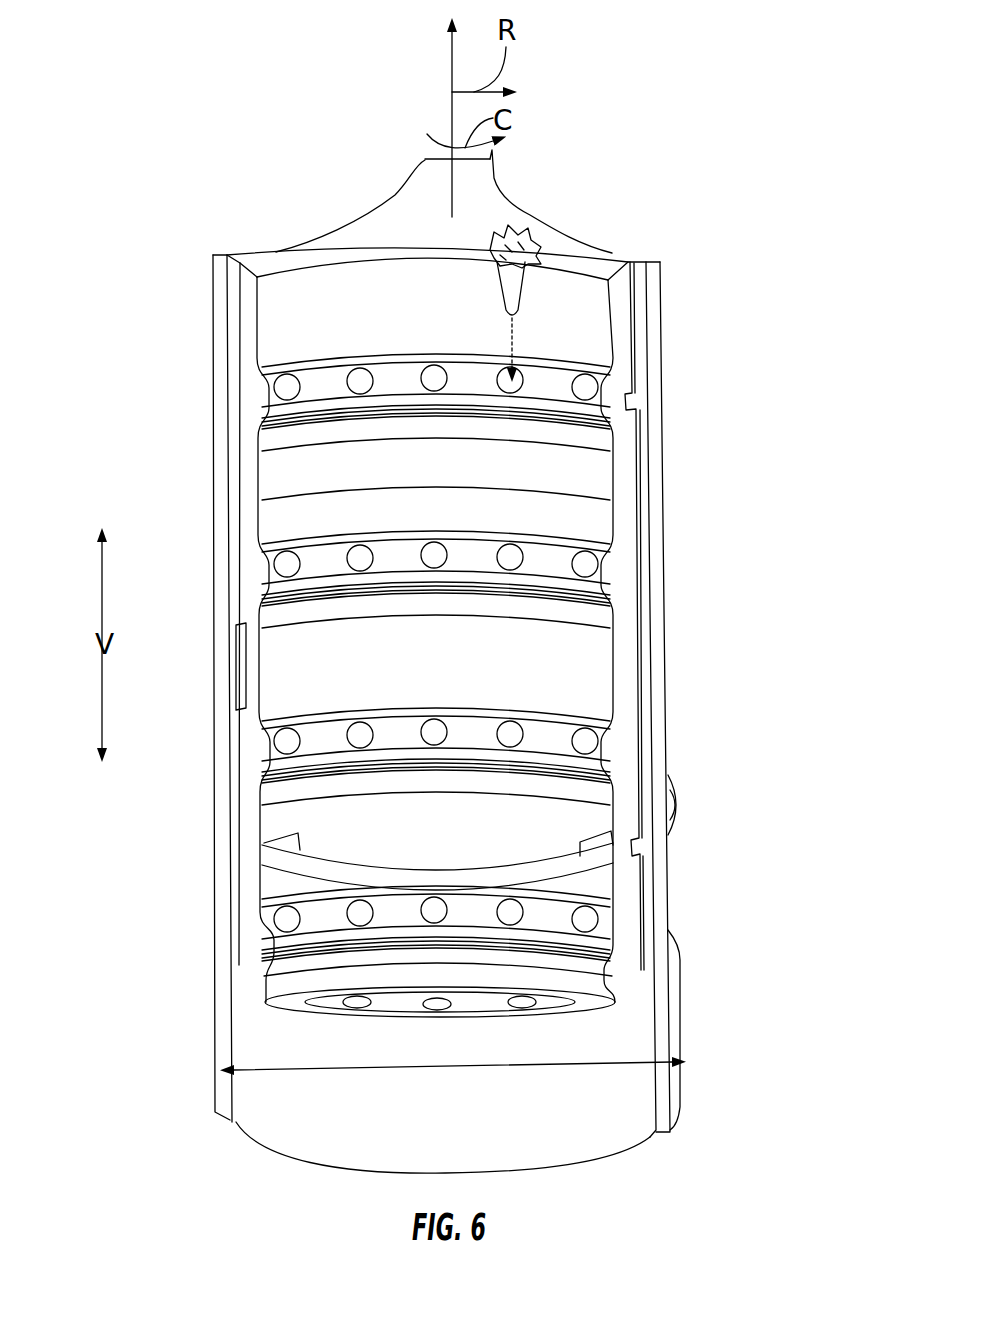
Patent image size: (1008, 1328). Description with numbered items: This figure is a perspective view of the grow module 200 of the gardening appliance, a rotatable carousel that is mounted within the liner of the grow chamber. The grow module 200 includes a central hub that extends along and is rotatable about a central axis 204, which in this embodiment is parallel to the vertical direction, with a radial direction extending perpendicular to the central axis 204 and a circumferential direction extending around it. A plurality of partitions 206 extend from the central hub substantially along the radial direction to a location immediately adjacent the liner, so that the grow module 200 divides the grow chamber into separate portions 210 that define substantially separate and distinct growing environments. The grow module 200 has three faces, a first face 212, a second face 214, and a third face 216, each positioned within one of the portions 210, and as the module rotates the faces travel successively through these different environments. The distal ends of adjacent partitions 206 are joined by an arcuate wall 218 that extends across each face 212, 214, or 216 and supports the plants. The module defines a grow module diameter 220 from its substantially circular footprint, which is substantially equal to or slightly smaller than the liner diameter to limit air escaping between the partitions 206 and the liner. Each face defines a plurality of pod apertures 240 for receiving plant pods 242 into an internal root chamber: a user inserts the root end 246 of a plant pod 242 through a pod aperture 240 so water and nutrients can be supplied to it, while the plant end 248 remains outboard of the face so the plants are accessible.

The grow module 200 is at (772, 91).
The central axis 204 is at (450, 68).
The partitions 206 is at (277, 245).
The portions of the grow chamber 210 is at (584, 668).
The first face 212 is at (587, 203).
The second face 214 is at (337, 205).
The third face 216 is at (338, 469).
The arcuate wall 218 is at (590, 500).
The grow module diameter 220 is at (548, 1065).
The pod apertures 240 is at (271, 395).
The plant pod 242 is at (517, 285).
The root end 246 is at (498, 312).
The plant end 248 is at (483, 247).